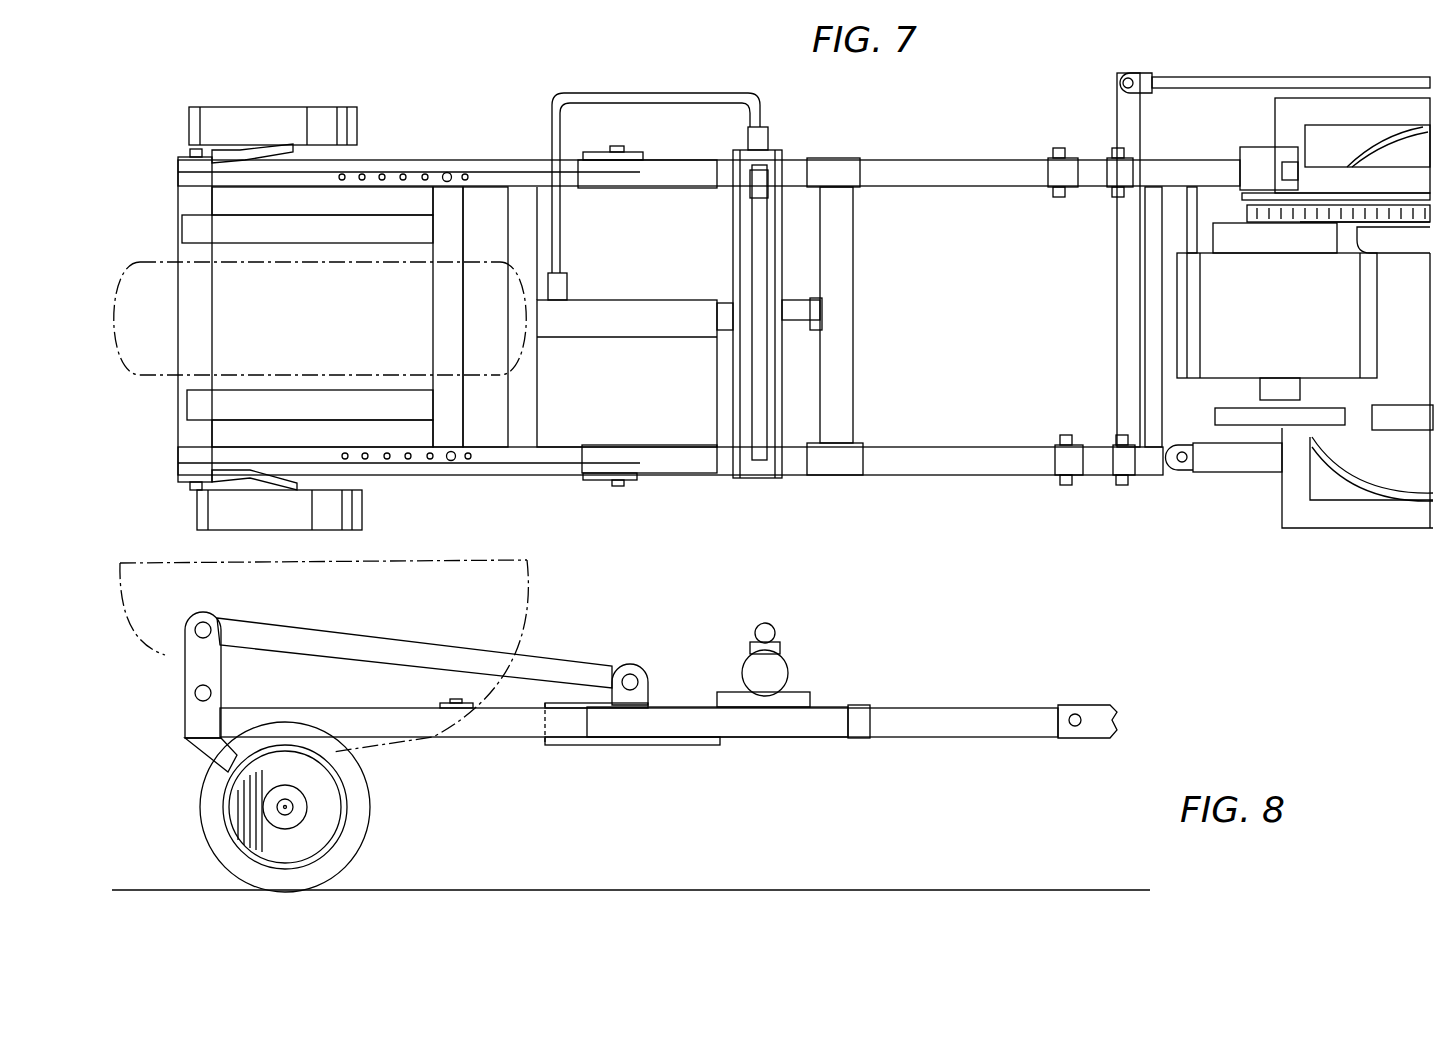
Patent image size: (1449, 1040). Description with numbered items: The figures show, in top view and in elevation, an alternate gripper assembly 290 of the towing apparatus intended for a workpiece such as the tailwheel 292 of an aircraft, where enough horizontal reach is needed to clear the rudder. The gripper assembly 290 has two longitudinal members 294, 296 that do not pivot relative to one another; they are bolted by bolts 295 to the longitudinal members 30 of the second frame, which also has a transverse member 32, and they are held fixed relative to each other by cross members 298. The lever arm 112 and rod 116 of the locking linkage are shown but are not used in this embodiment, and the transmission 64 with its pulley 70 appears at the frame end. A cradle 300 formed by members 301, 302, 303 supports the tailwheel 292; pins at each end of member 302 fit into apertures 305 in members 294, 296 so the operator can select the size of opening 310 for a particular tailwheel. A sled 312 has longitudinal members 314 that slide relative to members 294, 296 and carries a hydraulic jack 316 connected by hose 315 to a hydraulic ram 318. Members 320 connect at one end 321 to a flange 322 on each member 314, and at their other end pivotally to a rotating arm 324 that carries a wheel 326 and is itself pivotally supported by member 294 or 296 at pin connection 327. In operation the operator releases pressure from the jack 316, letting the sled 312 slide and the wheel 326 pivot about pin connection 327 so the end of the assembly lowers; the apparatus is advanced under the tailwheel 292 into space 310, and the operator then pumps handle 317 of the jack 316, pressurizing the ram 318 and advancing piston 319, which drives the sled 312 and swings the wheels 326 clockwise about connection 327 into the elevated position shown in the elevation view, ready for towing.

In FIG. 7, the longitudinal members 30 is at (1208, 165).
In FIG. 7, the transverse member 32 is at (1170, 220).
In FIG. 7, the transmission 64 is at (1299, 323).
In FIG. 7, the pulley 70 is at (1263, 440).
In FIG. 7, the lever arm 112 is at (1125, 110).
In FIG. 7, the rod 116 is at (1253, 73).
In FIG. 7, the gripper assembly 290 is at (935, 124).
In FIG. 7, the tailwheel 292 is at (153, 360).
In FIG. 7, the longitudinal member 294 is at (967, 175).
In FIG. 7, the bolts 295 is at (1066, 197).
In FIG. 8, the bolts 295 is at (1077, 713).
In FIG. 7, the longitudinal member 296 is at (992, 450).
In FIG. 8, the longitudinal member 296 is at (958, 723).
In FIG. 7, the cross members 298 is at (180, 205).
In FIG. 7, the cradle 300 is at (214, 409).
In FIG. 7, the member 301 is at (328, 233).
In FIG. 7, the member 302 is at (458, 223).
In FIG. 7, the member 303 is at (385, 405).
In FIG. 7, the apertures 305 is at (424, 173).
In FIG. 7, the opening 310 is at (390, 253).
In FIG. 8, the sled 312 is at (777, 728).
In FIG. 7, the longitudinal members 314 is at (838, 167).
In FIG. 7, the hose 315 is at (718, 92).
In FIG. 7, the hydraulic jack 316 is at (740, 250).
In FIG. 8, the hydraulic jack 316 is at (777, 670).
In FIG. 7, the handle 317 is at (762, 397).
In FIG. 7, the hydraulic ram 318 is at (647, 328).
In FIG. 8, the hydraulic ram 318 is at (570, 745).
In FIG. 7, the piston 319 is at (797, 303).
In FIG. 7, the members 320 is at (535, 162).
In FIG. 8, the members 320 is at (533, 668).
In FIG. 8, the end 321 is at (605, 670).
In FIG. 7, the flange 322 is at (615, 480).
In FIG. 8, the flange 322 is at (650, 697).
In FIG. 8, the rotating arm 324 is at (185, 662).
In FIG. 7, the wheel 326 is at (257, 117).
In FIG. 8, the wheel 326 is at (333, 813).
In FIG. 8, the pin connection 327 is at (200, 695).